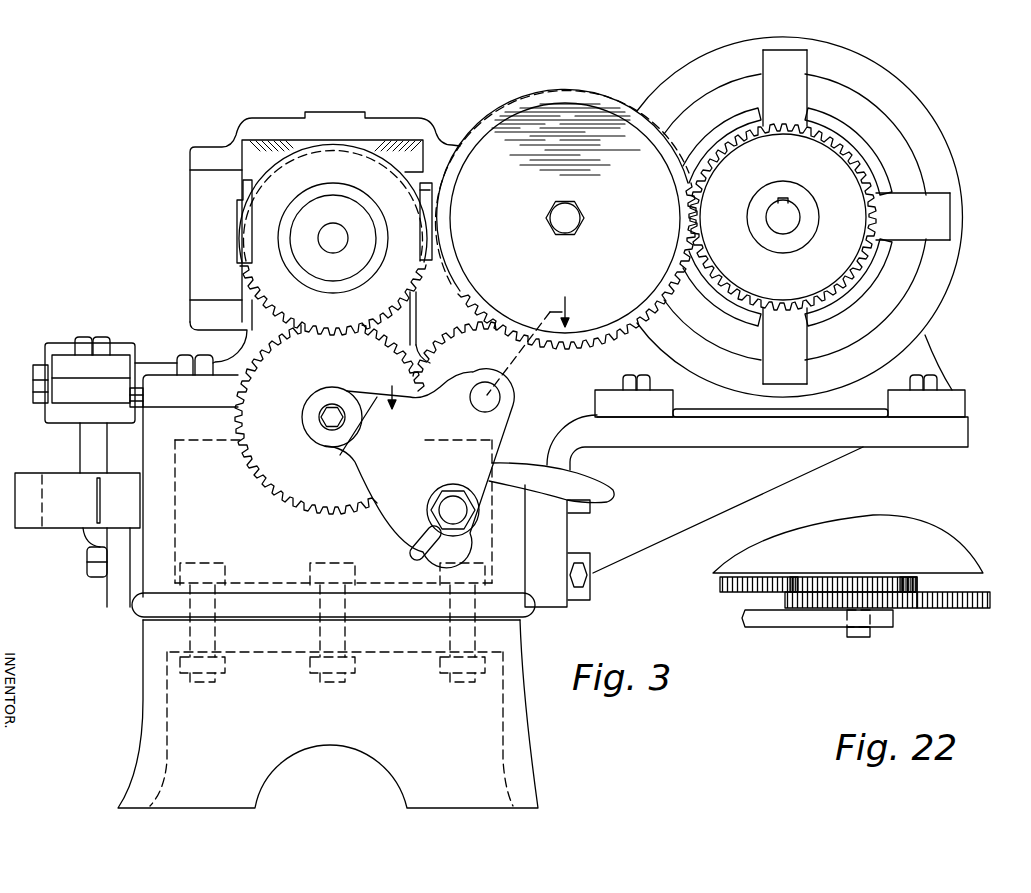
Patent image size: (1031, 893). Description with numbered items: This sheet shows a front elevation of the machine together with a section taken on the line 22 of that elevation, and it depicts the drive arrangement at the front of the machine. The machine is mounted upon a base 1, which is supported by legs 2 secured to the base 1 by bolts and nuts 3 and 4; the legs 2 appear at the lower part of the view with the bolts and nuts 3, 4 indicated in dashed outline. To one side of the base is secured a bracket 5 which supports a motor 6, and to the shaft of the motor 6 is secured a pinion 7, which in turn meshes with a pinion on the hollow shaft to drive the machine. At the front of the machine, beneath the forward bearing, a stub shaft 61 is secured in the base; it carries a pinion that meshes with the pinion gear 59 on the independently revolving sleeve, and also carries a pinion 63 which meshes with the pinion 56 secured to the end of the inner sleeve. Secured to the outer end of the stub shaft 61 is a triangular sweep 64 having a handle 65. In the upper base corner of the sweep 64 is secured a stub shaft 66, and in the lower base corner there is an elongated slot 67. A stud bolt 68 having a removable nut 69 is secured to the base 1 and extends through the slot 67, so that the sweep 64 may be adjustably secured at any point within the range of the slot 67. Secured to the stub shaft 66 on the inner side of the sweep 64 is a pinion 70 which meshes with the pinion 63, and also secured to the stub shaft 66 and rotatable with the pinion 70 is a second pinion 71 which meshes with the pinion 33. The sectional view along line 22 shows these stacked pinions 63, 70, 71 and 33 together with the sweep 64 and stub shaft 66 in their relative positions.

In FIG. 3, the base 1 is at (588, 573).
In FIG. 3, the legs 2 is at (517, 733).
In FIG. 3, the bolts 3 is at (197, 634).
In FIG. 3, the nuts 4 is at (173, 668).
In FIG. 3, the bracket 5 is at (958, 443).
In FIG. 3, the motor 6 is at (952, 200).
In FIG. 3, the pinion 7 is at (837, 160).
In FIG. 3, the section line 22— 22 is at (487, 347).
In FIG. 3, the pinion 33 is at (607, 98).
In FIG. 22, the pinion 33 is at (973, 610).
In FIG. 3, the pinion 56 is at (412, 237).
In FIG. 3, the pinion gear 59 is at (430, 207).
In FIG. 3, the stub shaft 61 is at (318, 432).
In FIG. 3, the pinion 63 is at (329, 419).
In FIG. 22, the pinion 63 is at (782, 577).
In FIG. 3, the triangular sweep 64 is at (419, 468).
In FIG. 22, the triangular sweep 64 is at (803, 628).
In FIG. 3, the handle 65 is at (597, 488).
In FIG. 3, the stub shaft 66 is at (486, 401).
In FIG. 22, the stub shaft 66 is at (862, 638).
In FIG. 3, the elongated slot 67 is at (418, 530).
In FIG. 3, the stud bolt 68 is at (447, 504).
In FIG. 3, the removable nut 69 is at (461, 488).
In FIG. 22, the pinion 70 is at (925, 558).
In FIG. 3, the second pinion 71 is at (454, 349).
In FIG. 22, the second pinion 71 is at (917, 609).